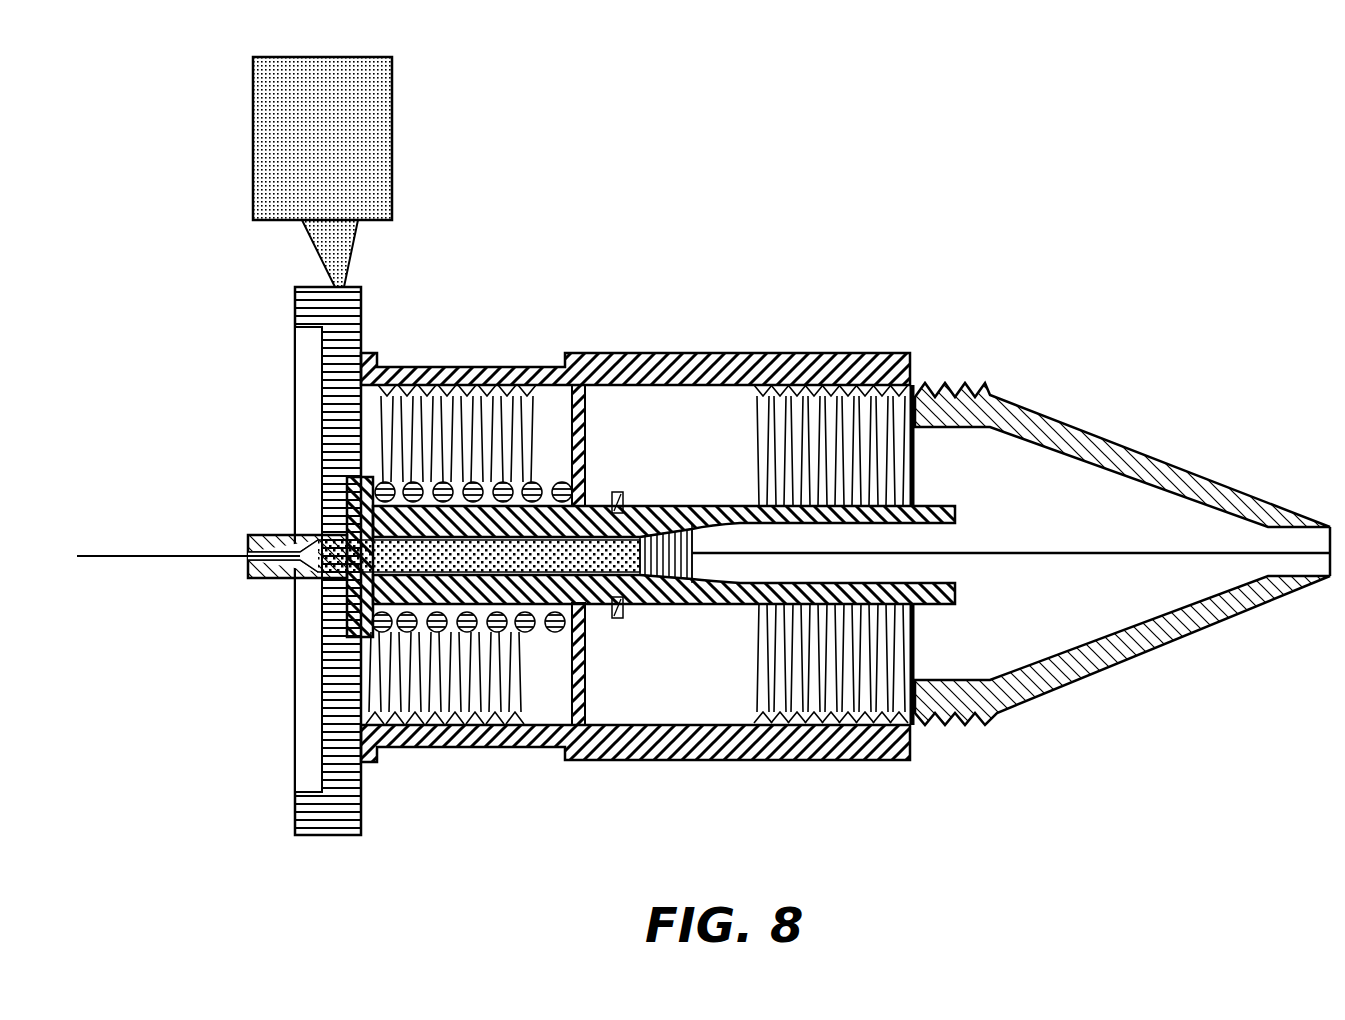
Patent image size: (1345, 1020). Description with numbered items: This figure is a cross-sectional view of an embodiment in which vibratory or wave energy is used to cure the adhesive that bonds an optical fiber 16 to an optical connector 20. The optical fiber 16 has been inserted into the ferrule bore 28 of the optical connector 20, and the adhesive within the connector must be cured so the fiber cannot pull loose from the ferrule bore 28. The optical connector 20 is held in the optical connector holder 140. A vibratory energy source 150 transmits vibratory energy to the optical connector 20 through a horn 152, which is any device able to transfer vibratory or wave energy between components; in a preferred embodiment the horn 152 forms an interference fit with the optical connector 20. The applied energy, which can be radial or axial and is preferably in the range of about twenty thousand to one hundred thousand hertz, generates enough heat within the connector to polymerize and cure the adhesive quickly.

The optical fiber 16 is at (335, 600).
The optical connector 20 is at (652, 352).
The ferrule bore 28 is at (248, 557).
The optical connector holder 140 is at (293, 292).
The vibratory energy source 150 is at (392, 78).
The horn 152 is at (360, 223).